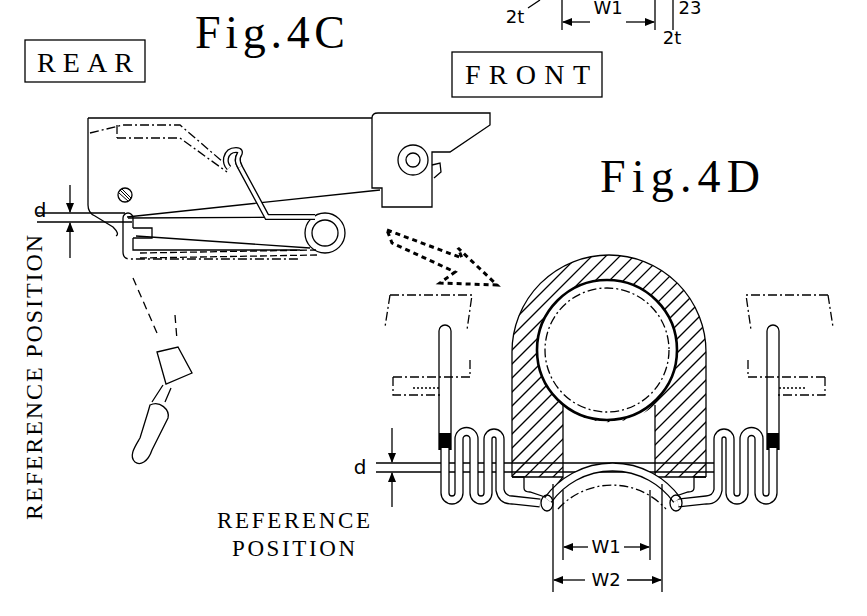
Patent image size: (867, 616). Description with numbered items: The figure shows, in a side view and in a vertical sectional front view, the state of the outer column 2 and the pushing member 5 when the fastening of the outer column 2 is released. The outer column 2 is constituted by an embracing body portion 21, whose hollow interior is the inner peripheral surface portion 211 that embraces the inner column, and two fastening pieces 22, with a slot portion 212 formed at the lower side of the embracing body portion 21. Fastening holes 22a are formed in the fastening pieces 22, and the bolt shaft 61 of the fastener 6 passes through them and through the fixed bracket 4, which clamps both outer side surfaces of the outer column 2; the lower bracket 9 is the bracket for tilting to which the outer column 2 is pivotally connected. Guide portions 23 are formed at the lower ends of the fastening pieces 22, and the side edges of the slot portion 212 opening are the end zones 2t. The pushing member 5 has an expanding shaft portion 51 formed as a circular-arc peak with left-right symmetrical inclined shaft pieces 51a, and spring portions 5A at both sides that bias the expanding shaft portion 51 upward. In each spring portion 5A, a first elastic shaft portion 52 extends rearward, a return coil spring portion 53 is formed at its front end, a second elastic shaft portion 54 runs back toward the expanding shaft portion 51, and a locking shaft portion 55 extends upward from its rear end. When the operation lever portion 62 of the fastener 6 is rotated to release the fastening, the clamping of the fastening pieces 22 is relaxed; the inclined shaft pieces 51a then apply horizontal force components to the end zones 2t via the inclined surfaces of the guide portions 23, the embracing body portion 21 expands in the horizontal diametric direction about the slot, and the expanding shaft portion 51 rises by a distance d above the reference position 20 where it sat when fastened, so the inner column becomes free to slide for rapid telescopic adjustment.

In FIG. 4C, the outer column 2 is at (173, 115).
In FIG. 4D, the outer column 2 is at (583, 368).
In FIG. 4C, the end zones 2t is at (140, 240).
In FIG. 4D, the end zones 2t is at (553, 508).
In FIG. 4C, the fixed bracket 4 is at (215, 131).
In FIG. 4D, the fixed bracket 4 is at (418, 288).
In FIG. 4C, the pushing member 5 is at (255, 219).
In FIG. 4D, the pushing member 5 is at (605, 441).
In FIG. 4C, the spring portion 5A is at (283, 275).
In FIG. 4D, the spring portion 5A is at (437, 410).
In FIG. 4C, the fastener 6 is at (132, 186).
In FIG. 4C, the lower bracket 9 is at (448, 135).
In FIG. 4D, the spring reference position 20 is at (613, 503).
In FIG. 4C, the embracing body portion 21 is at (288, 118).
In FIG. 4D, the embracing body portion 21 is at (662, 287).
In FIG. 4C, the fastening pieces 22 is at (118, 230).
In FIG. 4D, the fastening pieces 22 is at (511, 407).
In FIG. 4C, the fastening holes 22a is at (123, 188).
In FIG. 4C, the guide portions 23 is at (154, 233).
In FIG. 4D, the guide portions 23 is at (549, 508).
In FIG. 4C, the expanding shaft portion 51 is at (155, 218).
In FIG. 4D, the expanding shaft portion 51 is at (603, 462).
In FIG. 4D, the inclined shaft pieces 51a is at (562, 487).
In FIG. 4C, the first elastic shaft portions 52 is at (245, 252).
In FIG. 4D, the first elastic shaft portions 52 is at (518, 506).
In FIG. 4C, the return coil spring portions 53 is at (347, 230).
In FIG. 4D, the return coil spring portions 53 is at (472, 502).
In FIG. 4C, the second elastic shaft portions 54 is at (271, 171).
In FIG. 4D, the second elastic shaft portions 54 is at (440, 357).
In FIG. 4C, the locking shaft portions 55 is at (234, 151).
In FIG. 4C, the bolt shaft 61 is at (133, 195).
In FIG. 4C, the operation lever portion 62 is at (185, 362).
In FIG. 4D, the inner peripheral surface portion 211 is at (655, 300).
In FIG. 4D, the slot portion 212 is at (666, 500).